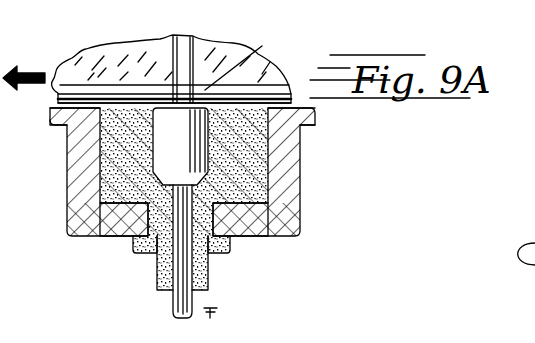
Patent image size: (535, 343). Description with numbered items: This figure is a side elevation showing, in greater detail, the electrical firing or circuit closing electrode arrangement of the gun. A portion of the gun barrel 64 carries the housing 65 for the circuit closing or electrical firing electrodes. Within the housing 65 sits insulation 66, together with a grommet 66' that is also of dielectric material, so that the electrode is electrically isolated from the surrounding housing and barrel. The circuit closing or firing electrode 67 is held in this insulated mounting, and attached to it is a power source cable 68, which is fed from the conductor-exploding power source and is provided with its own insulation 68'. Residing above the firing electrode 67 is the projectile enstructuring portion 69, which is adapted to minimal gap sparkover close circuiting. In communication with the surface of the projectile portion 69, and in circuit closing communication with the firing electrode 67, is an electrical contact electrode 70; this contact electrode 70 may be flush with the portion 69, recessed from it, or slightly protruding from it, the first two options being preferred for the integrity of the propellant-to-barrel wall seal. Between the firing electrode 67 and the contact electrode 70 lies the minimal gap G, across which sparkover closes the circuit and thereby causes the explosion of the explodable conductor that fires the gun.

The gun barrel portion 64 is at (60, 125).
The housing 65 is at (82, 202).
The insulation 66 is at (181, 245).
The grommet 66' is at (127, 271).
The circuit closing electrode 67 is at (180, 213).
The power source cable 68 is at (197, 191).
The cable insulation 68' is at (217, 271).
The projectile enstructuring portion 69 is at (128, 63).
The electrical contact electrode 70 is at (175, 62).
The minimal gap sparkover circuit closure G is at (262, 46).